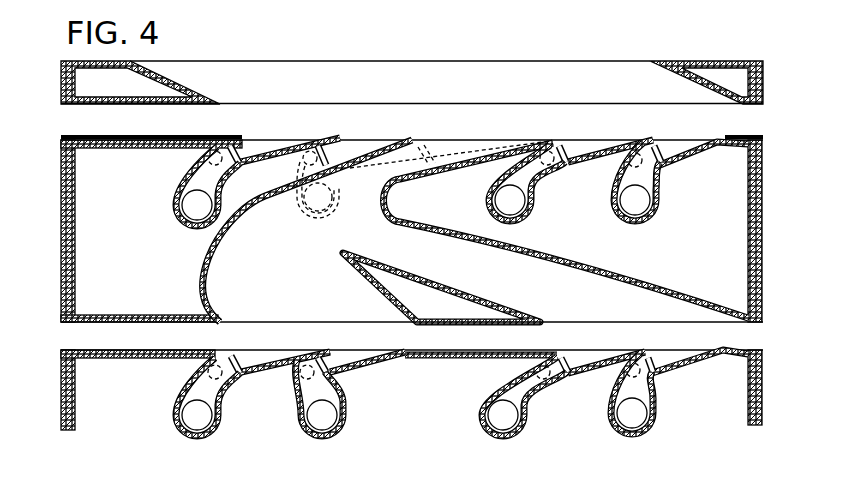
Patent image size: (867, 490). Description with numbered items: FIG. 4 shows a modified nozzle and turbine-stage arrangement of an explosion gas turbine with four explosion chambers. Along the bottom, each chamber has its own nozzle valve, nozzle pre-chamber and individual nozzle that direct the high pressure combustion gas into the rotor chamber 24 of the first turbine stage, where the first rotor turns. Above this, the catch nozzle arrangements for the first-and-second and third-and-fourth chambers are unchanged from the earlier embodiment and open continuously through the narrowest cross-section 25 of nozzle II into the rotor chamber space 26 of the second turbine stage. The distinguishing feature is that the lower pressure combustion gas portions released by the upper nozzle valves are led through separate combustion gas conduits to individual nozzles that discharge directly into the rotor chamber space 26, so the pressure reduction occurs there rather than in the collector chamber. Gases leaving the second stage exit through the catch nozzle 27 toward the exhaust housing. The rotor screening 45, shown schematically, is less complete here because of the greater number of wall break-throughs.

The catch nozzle 27 is at (414, 88).
The rotor chamber space of the second turbine stage 26 is at (799, 106).
The rotor screening 45 is at (92, 137).
The rotor chamber of the first turbine stage 24 is at (746, 337).
The narrowest cross-section of nozzle II 25 is at (432, 150).